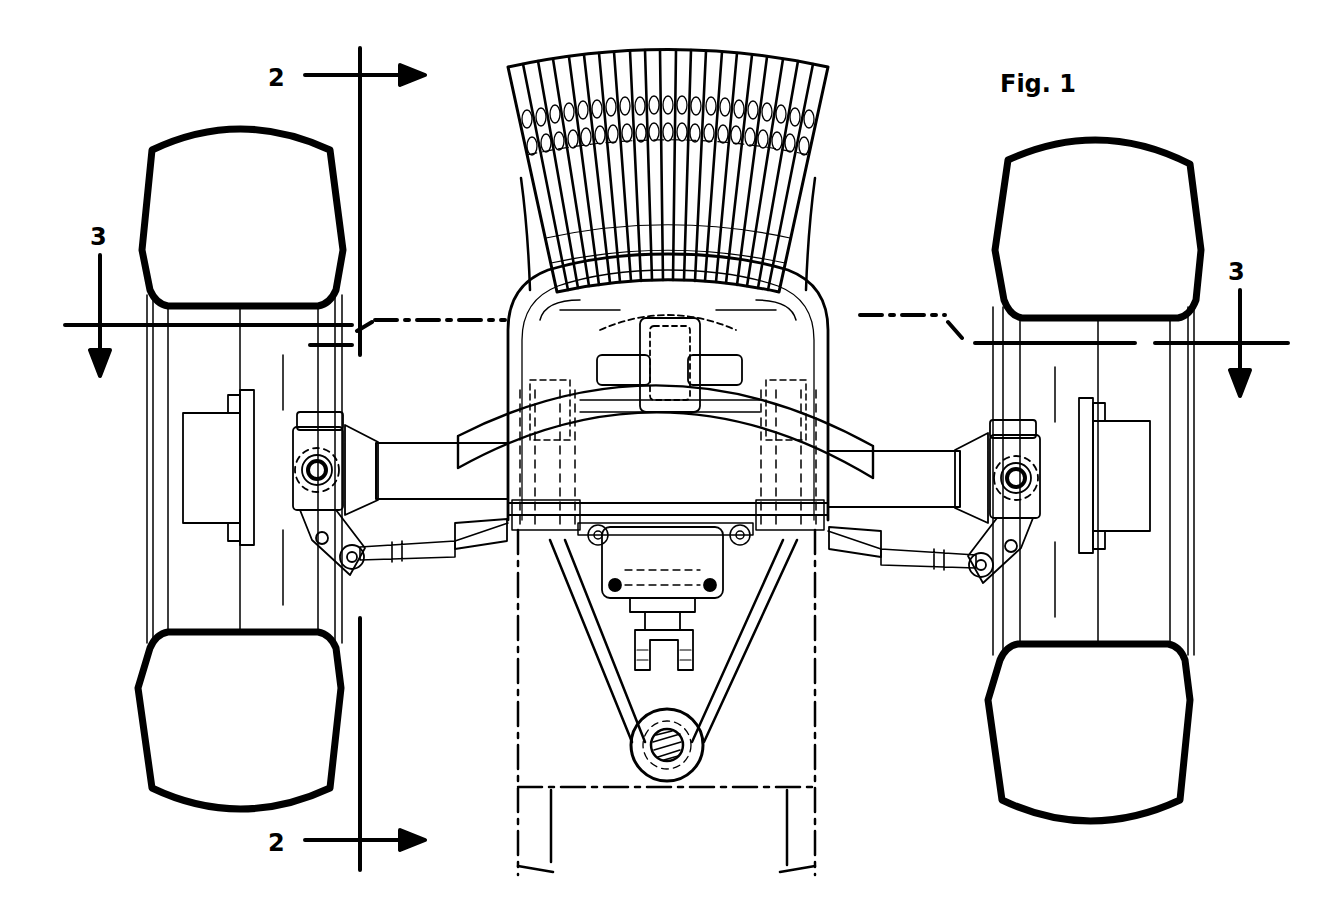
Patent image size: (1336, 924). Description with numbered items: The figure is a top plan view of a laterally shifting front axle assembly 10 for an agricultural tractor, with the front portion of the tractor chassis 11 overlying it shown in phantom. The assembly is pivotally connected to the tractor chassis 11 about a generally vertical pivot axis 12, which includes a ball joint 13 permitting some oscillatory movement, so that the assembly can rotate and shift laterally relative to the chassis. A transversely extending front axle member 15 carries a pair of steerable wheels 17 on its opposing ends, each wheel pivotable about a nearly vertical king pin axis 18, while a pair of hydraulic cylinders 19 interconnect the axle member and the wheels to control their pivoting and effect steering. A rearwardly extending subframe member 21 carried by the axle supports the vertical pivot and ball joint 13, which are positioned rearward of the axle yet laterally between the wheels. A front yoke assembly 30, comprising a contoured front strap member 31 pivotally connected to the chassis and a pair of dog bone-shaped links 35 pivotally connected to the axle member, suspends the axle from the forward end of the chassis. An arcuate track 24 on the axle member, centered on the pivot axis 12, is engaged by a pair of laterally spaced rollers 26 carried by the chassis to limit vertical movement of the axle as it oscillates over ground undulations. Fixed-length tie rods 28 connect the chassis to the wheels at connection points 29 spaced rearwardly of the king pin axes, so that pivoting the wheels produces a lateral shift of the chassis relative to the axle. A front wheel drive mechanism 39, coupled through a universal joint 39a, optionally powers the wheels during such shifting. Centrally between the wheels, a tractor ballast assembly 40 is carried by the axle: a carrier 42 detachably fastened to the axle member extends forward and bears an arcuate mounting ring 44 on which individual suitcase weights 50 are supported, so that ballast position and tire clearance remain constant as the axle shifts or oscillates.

The front axle assembly 10 is at (1195, 107).
The tractor chassis 11 is at (805, 835).
The vertical pivot axis 12 is at (675, 760).
The ball joint 13 is at (703, 763).
The front axle member 15 is at (900, 475).
The steerable wheels 17 is at (173, 800).
The pivot axis (king pin) 18 is at (306, 470).
The hydraulic cylinders 19 is at (450, 558).
The subframe member 21 is at (605, 698).
The arcuate track 24 is at (850, 425).
The rollers 26 is at (530, 395).
The tie rods 28 is at (460, 580).
The connection point 29 is at (325, 565).
The front yoke assembly 30 is at (805, 290).
The front strap member 31 is at (580, 320).
The dog bone-shaped links 35 is at (525, 310).
The front wheel drive mechanism 39 is at (616, 600).
The universal joint 39a is at (640, 660).
The tractor ballast assembly 40 is at (618, 154).
The carrier 42 is at (815, 178).
The arcuate mounting ring 44 is at (565, 290).
The suitcase weights 50 is at (690, 50).